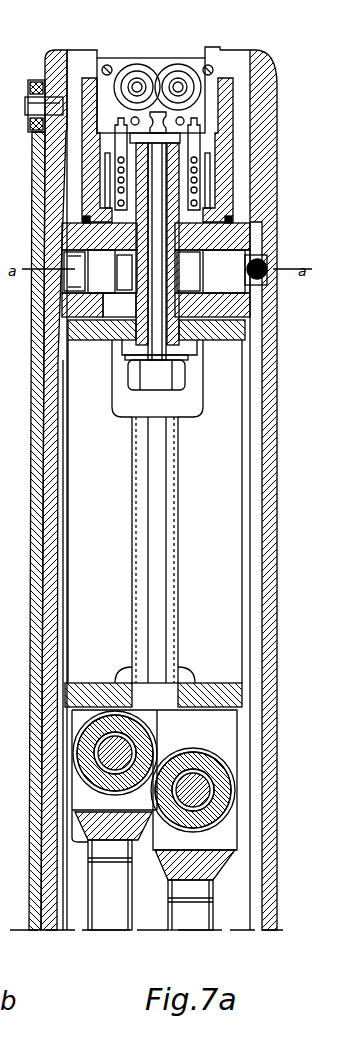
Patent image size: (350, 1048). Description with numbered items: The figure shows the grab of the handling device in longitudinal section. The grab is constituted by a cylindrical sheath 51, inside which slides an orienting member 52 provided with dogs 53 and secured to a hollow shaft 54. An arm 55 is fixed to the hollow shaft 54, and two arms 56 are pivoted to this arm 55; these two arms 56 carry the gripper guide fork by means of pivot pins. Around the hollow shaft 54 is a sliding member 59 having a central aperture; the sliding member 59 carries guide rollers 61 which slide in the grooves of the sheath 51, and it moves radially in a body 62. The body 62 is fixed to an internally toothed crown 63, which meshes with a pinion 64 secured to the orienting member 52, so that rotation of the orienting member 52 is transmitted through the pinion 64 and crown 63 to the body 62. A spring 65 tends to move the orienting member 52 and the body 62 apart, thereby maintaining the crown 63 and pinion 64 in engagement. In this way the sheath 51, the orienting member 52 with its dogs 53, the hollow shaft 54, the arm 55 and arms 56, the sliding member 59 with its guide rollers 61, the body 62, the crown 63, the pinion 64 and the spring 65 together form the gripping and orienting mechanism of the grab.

The cylindrical sheath 51 is at (275, 95).
The orienting member 52 is at (121, 66).
The dogs 53 is at (213, 50).
The hollow shaft 54 is at (127, 357).
The arm 55 is at (236, 603).
The arms 56 is at (175, 912).
The sliding member 59 is at (215, 297).
The guide rollers 61 is at (60, 287).
The body 62 is at (243, 243).
The internally toothed crown 63 is at (215, 190).
The pinion 64 is at (200, 160).
The spring 65 is at (228, 216).